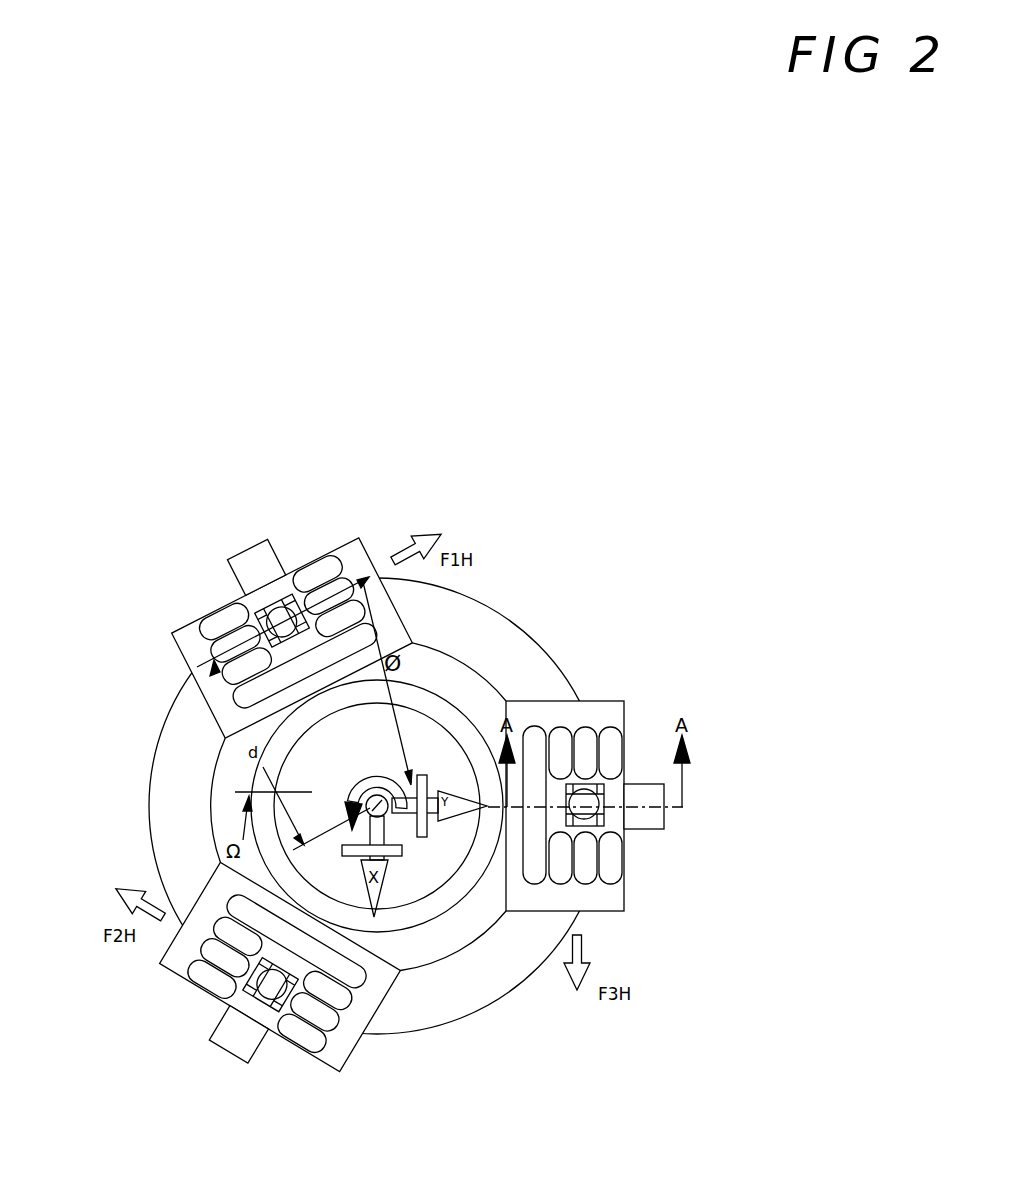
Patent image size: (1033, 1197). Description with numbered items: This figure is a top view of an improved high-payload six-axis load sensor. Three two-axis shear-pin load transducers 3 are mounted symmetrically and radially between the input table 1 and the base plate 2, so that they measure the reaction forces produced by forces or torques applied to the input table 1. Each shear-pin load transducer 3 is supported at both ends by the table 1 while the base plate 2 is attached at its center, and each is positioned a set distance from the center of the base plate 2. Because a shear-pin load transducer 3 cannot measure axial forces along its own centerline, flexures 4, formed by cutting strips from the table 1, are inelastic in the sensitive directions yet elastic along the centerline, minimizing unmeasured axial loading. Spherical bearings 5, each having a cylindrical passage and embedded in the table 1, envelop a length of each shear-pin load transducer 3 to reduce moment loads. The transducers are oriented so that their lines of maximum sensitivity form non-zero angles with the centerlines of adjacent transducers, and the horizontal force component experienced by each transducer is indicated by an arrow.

The input table 1 is at (237, 768).
The base plate 2 is at (469, 1010).
The shear-pin load transducer 3 is at (645, 831).
The flexure 4 is at (577, 702).
The spherical bearing 5 is at (584, 803).